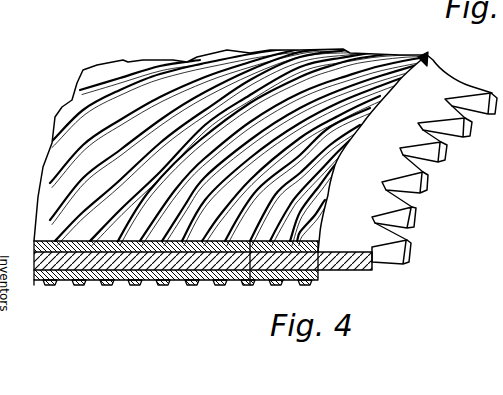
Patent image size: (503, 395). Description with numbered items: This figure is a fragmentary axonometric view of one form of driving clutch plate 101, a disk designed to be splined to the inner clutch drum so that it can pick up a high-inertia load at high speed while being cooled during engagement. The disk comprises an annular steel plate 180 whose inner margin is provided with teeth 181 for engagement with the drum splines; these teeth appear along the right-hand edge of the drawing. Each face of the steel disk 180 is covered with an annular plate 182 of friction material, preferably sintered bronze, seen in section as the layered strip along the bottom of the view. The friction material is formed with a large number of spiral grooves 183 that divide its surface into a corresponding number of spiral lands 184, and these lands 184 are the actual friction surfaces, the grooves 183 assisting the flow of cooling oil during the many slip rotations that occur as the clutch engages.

The abrasive grinding wheel 101 is at (64, 99).
The annular steel plate 180 is at (372, 263).
The teeth 181 is at (412, 203).
The annular plate of friction material 182 is at (33, 244).
The spiral grooves 183 is at (266, 283).
The spiral lands 184 is at (147, 234).